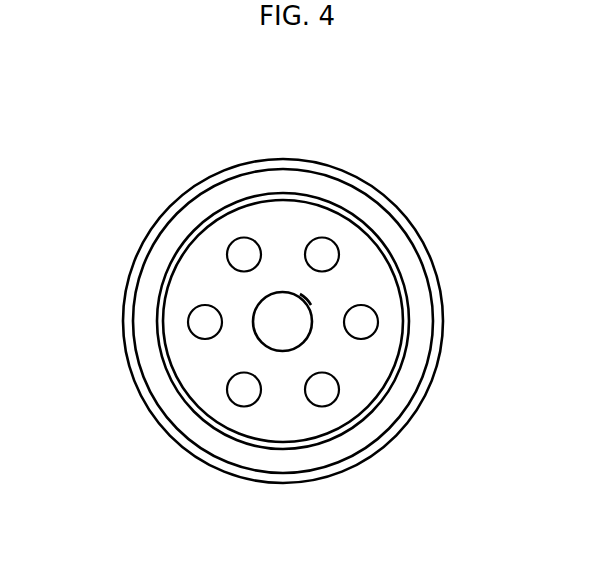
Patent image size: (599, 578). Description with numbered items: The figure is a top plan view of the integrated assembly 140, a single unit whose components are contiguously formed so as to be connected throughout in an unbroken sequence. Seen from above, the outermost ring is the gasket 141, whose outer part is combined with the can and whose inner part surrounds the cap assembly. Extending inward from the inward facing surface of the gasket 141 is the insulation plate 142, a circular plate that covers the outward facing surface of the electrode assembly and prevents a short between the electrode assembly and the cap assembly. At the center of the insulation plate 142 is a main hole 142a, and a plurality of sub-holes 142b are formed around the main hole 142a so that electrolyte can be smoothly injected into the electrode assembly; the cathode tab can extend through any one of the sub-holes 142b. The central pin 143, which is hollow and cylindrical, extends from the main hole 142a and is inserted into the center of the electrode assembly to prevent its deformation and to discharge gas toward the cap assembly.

The integrated assembly 140 is at (75, 90).
The gasket 141 is at (335, 172).
The insulation plate 142 is at (265, 220).
The main hole 142a is at (272, 312).
The sub-holes 142b is at (366, 320).
The central pin 143 is at (308, 302).